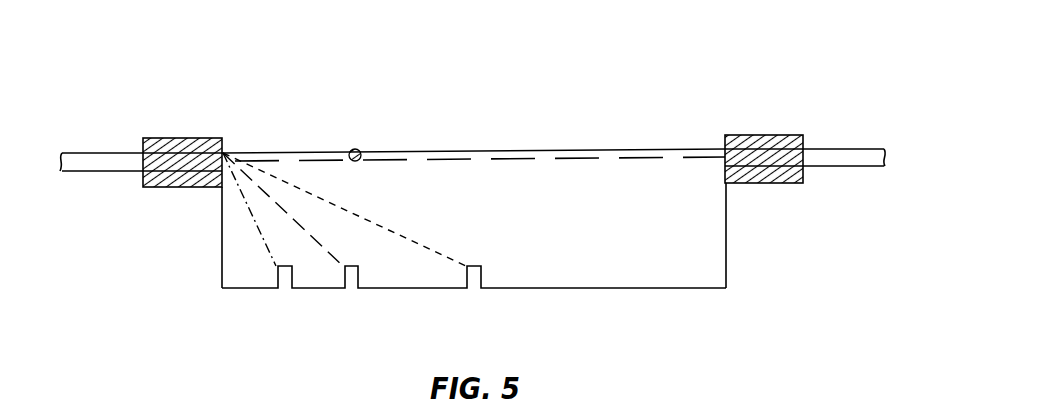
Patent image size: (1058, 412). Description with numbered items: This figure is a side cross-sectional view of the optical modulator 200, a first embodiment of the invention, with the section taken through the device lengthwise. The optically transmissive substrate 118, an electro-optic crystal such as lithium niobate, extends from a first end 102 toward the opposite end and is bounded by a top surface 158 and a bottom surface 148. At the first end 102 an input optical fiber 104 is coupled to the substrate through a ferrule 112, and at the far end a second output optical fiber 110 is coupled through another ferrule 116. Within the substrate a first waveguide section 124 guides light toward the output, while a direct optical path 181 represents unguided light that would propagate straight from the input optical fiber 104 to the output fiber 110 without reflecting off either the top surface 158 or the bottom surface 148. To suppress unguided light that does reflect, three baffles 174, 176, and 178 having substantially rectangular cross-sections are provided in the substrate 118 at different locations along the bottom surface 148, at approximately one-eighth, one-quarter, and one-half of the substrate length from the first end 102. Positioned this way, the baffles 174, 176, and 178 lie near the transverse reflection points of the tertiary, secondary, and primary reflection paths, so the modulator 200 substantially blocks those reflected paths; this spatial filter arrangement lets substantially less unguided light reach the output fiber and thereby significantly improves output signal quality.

The input optical fiber 104 is at (98, 153).
The ferrule 112 is at (168, 138).
The top surface 158 is at (268, 152).
The first waveguide section 124 is at (353, 149).
The direct optical path 181 is at (628, 157).
The ferrule 116 is at (775, 135).
The second output optical fiber 110 is at (845, 149).
The optical modulator 200 is at (588, 75).
The first end 102 is at (221, 237).
The optically transmissive substrate 118 is at (227, 274).
The bottom surface 148 is at (630, 288).
The baffle 174 is at (285, 292).
The baffle 176 is at (352, 292).
The baffle 178 is at (475, 292).